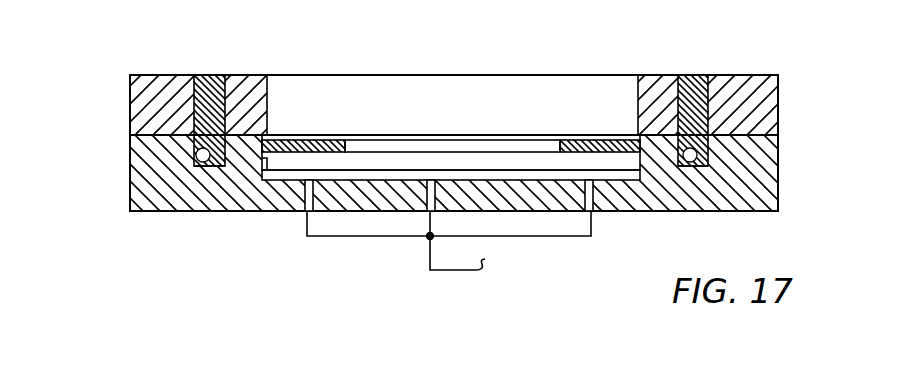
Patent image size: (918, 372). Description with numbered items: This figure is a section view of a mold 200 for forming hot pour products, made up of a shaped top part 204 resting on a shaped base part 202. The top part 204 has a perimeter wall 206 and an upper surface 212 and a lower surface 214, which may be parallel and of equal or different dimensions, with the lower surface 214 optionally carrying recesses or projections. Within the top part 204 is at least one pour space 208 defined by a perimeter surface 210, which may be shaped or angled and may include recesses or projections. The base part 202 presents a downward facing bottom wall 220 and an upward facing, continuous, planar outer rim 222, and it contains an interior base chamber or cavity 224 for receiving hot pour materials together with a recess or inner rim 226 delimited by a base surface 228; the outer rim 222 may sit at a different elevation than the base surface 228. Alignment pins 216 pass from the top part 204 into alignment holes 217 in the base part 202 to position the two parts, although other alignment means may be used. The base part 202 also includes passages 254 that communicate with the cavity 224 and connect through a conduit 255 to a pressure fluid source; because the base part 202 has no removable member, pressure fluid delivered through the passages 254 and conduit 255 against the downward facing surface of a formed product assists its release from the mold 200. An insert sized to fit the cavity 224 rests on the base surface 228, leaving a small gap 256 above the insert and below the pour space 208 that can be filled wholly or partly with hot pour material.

The mold 200 is at (796, 60).
The base part 202 is at (130, 150).
The top part 204 is at (130, 95).
The perimeter wall 206 is at (778, 98).
The pour space 208 is at (487, 116).
The perimeter surface 210 is at (267, 107).
The upper surface 212 is at (247, 75).
The lower surface 214 is at (132, 183).
The alignment pins 216 is at (217, 75).
The alignment holes 217 is at (203, 162).
The bottom wall 220 is at (195, 212).
The outer rim 222 is at (778, 128).
The interior base chamber 224 is at (427, 149).
The inner rim 226 is at (268, 158).
The base surface 228 is at (543, 211).
The passages 254 is at (321, 213).
The conduit 255 is at (453, 272).
The gap 256 is at (577, 137).